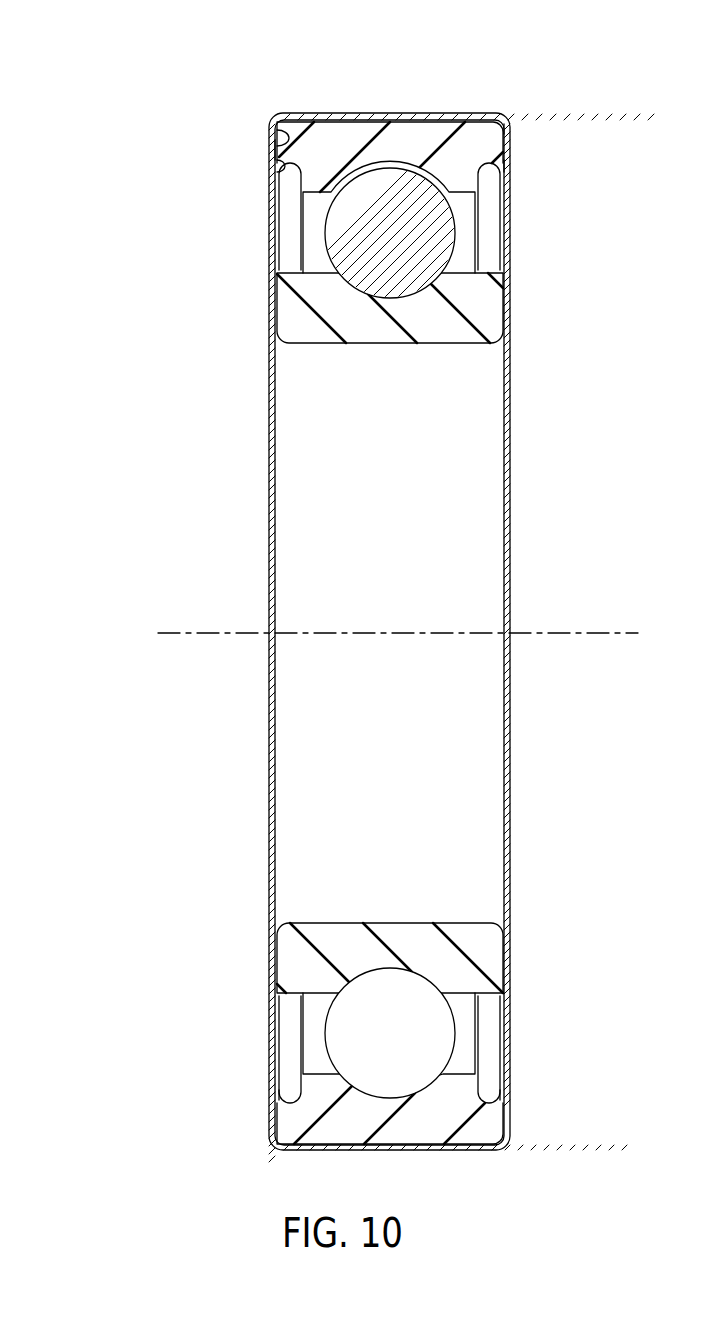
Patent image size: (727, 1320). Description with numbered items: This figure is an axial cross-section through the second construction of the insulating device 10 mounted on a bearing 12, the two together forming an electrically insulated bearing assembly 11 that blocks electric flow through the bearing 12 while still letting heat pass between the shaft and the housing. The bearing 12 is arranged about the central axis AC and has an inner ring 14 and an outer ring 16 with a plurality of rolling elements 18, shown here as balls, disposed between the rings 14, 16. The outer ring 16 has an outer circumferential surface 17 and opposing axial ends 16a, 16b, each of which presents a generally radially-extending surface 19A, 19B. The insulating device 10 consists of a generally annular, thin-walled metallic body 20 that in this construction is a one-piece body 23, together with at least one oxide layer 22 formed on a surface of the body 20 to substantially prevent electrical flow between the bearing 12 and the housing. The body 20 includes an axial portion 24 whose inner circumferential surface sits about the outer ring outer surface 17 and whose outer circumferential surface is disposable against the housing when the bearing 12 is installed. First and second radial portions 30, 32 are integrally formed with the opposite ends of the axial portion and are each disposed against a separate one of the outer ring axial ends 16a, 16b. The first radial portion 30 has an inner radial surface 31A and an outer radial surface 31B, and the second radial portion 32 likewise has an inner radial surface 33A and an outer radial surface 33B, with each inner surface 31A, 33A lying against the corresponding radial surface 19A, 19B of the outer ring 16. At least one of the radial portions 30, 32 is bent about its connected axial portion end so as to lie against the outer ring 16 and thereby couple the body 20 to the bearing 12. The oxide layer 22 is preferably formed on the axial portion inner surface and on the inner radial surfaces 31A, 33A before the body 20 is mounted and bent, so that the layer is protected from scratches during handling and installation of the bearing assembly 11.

The insulating device 10 is at (262, 106).
The electrically insulated bearing assembly 11 is at (118, 308).
The bearing 12 is at (246, 303).
The inner ring 14 is at (510, 303).
The outer ring 16 is at (499, 203).
The first axial end of outer ring 16a is at (505, 1125).
The second axial end of outer ring 16b is at (273, 1113).
The outer circumferential surface 17 is at (477, 125).
The rolling elements 18 is at (393, 257).
The radially-extending surface 19A is at (500, 1097).
The radially-extending surface 19B is at (286, 1138).
The metallic body 20 is at (446, 77).
The oxide layer 22 is at (373, 101).
The one-piece body 23 is at (271, 440).
The axial portion 24 is at (334, 101).
The first radial portion 30 is at (527, 143).
The inner radial surface 31A is at (508, 123).
The outer radial surface 31B is at (508, 168).
The second radial portion 32 is at (255, 148).
The inner radial surface 33A is at (277, 136).
The outer radial surface 33B is at (280, 165).
The central axis AC is at (572, 633).